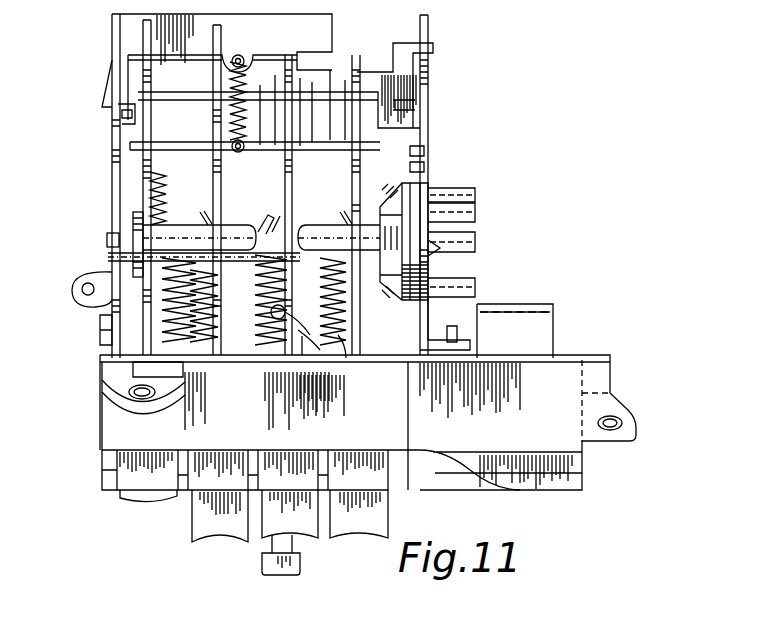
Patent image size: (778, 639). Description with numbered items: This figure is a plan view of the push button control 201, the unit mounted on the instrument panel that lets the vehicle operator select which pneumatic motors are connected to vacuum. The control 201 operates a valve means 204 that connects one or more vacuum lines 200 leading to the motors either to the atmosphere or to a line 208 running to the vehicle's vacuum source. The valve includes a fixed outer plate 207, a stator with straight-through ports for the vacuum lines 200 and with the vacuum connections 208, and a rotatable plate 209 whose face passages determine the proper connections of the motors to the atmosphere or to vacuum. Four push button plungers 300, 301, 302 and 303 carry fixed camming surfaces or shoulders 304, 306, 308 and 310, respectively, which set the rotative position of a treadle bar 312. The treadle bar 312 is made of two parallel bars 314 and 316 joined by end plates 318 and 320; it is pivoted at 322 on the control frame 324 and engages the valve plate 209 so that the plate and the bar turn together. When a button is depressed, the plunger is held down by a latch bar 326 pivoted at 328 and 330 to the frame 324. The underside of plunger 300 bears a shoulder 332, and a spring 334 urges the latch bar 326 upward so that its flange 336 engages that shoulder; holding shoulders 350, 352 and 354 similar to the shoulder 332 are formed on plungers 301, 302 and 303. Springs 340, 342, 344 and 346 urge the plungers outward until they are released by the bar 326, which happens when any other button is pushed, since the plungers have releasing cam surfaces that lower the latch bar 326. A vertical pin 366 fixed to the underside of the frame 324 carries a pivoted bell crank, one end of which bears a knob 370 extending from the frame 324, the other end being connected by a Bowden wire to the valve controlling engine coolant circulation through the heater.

The suction or vacuum line 200 is at (480, 194).
The push button control 201 is at (93, 436).
The valve means 204 is at (432, 248).
The fixed outer plate 207 is at (432, 190).
The vacuum connection 208 is at (478, 224).
The rotatable plate 209 is at (430, 176).
The plunger 300 is at (165, 498).
The plunger 301 is at (222, 540).
The plunger 302 is at (305, 530).
The plunger 303 is at (378, 534).
The camming surface or shoulder 304 is at (120, 262).
The camming surface or shoulder 306 is at (217, 307).
The camming surface or shoulder 308 is at (285, 272).
The camming surface or shoulder 310 is at (344, 362).
The treadle bar 312 is at (228, 214).
The parallel bar 314 is at (322, 234).
The parallel bar 316 is at (262, 230).
The end plate 318 is at (133, 217).
The end plate 320 is at (384, 222).
The pivot 322 is at (107, 240).
The control frame 324 is at (115, 200).
The latch bar 326 is at (290, 75).
The pivot 328 is at (122, 122).
The pivot 330 is at (415, 100).
The shoulder 332 is at (147, 40).
The spring 334 is at (244, 66).
The flange 336 is at (128, 60).
The spring 340 is at (166, 210).
The spring 342 is at (200, 352).
The spring 344 is at (258, 358).
The spring 346 is at (353, 294).
The holding shoulder 350 is at (217, 88).
The holding shoulder 352 is at (241, 56).
The holding shoulder 354 is at (362, 72).
The vertical pin 366 is at (300, 352).
The knob 370 is at (283, 570).